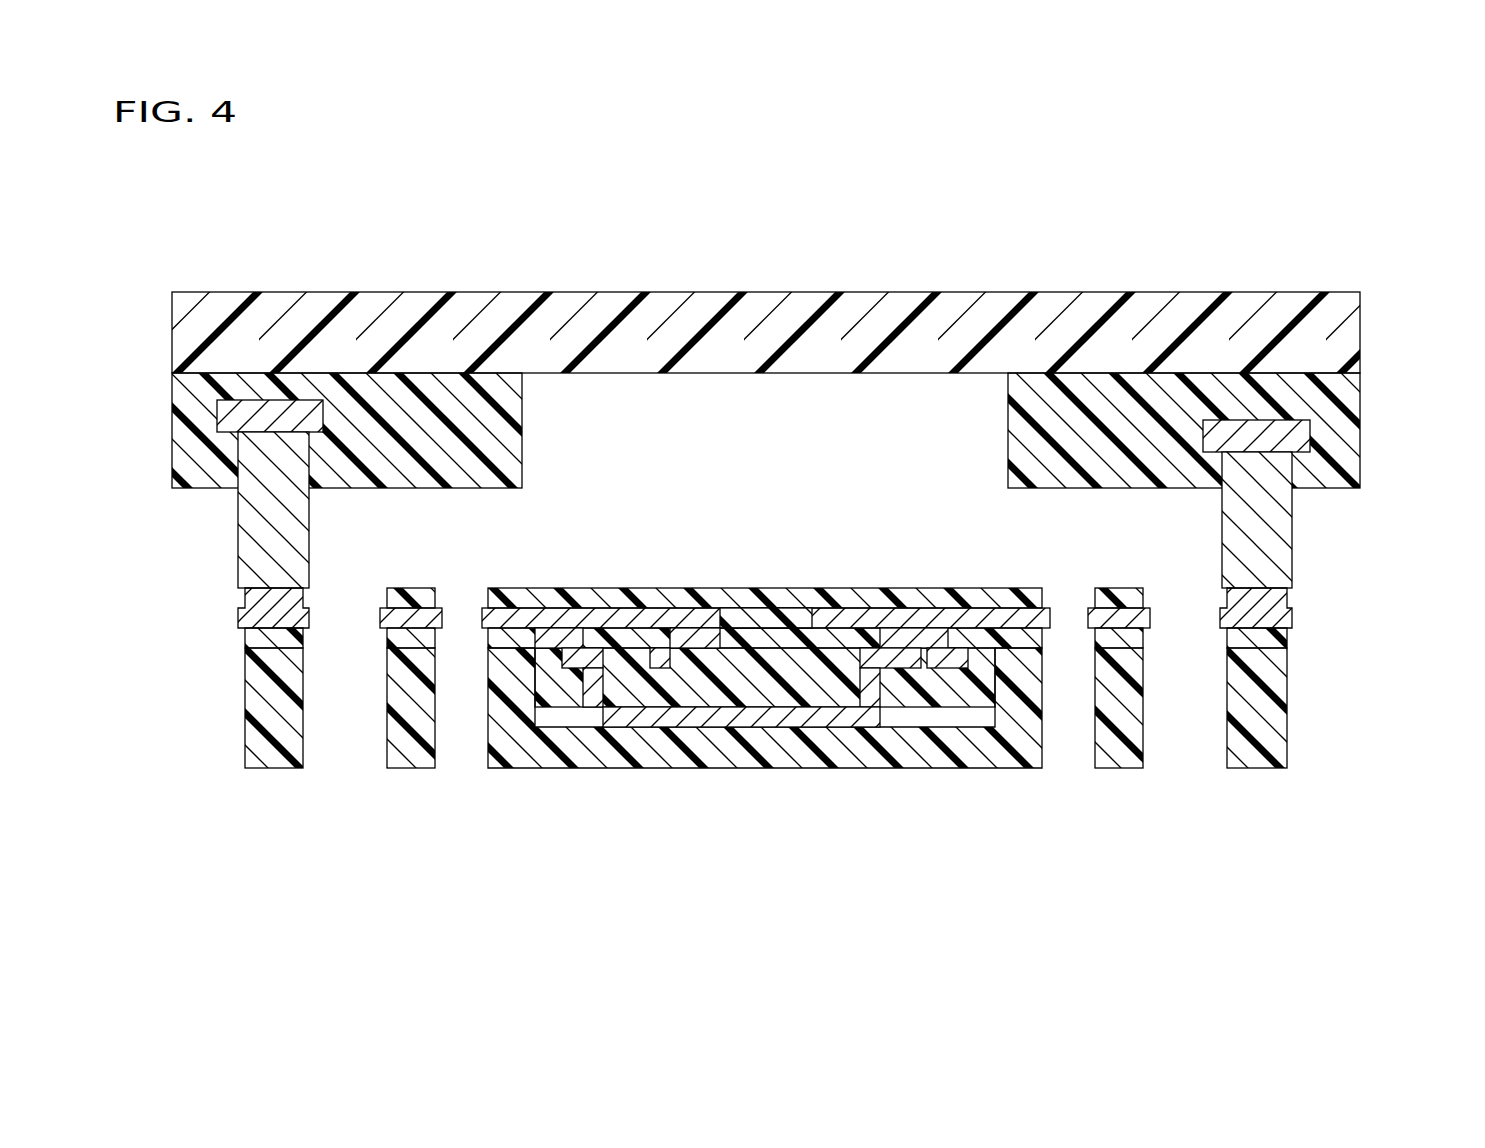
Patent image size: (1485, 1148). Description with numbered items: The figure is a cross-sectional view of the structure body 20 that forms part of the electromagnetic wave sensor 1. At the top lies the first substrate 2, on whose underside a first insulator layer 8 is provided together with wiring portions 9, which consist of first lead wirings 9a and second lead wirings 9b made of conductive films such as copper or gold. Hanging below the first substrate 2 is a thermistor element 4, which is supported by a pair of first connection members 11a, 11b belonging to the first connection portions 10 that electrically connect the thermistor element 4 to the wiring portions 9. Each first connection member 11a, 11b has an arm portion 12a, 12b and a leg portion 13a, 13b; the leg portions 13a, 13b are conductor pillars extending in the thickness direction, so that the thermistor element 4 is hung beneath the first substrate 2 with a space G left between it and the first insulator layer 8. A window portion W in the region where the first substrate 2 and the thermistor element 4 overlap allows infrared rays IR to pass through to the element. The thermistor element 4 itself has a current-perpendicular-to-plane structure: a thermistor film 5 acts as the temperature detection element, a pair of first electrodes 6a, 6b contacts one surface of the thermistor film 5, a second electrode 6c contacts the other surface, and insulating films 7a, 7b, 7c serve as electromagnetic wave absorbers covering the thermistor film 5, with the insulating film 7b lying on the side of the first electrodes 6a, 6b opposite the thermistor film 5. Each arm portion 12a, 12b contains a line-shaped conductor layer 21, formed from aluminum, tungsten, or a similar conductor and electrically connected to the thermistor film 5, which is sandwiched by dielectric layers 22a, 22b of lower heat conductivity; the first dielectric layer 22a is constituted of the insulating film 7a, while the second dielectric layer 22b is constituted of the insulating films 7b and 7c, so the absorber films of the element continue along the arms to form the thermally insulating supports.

The electromagnetic wave sensor 1 is at (227, 213).
The first substrate 2 is at (1340, 348).
The thermistor element 4 is at (688, 755).
The thermistor film 5 is at (770, 692).
The first electrode 6a is at (905, 636).
The first electrode 6b is at (640, 636).
The second electrode 6c is at (735, 724).
The insulating film 7a is at (771, 562).
The insulating film 7b is at (751, 640).
The insulating film 7c is at (256, 690).
The first insulator layer 8 is at (1340, 408).
The wiring portion 9 is at (786, 440).
The first lead wiring 9a is at (1305, 438).
The second lead wiring 9b is at (238, 412).
The first connection portion 10 is at (787, 535).
The first connection member 11a is at (1263, 541).
The first connection member 11b is at (290, 531).
The arm portion 12a is at (1287, 617).
The arm portion 12b is at (168, 545).
The leg portion 13a is at (1273, 544).
The leg portion 13b is at (256, 547).
The structure body 20 is at (767, 718).
The conductor layer 21 is at (383, 615).
The first dielectric layer 22a is at (394, 594).
The second dielectric layer 22b is at (432, 845).
The window portion W is at (683, 478).
The infrared rays IR is at (765, 518).
The space G is at (848, 548).